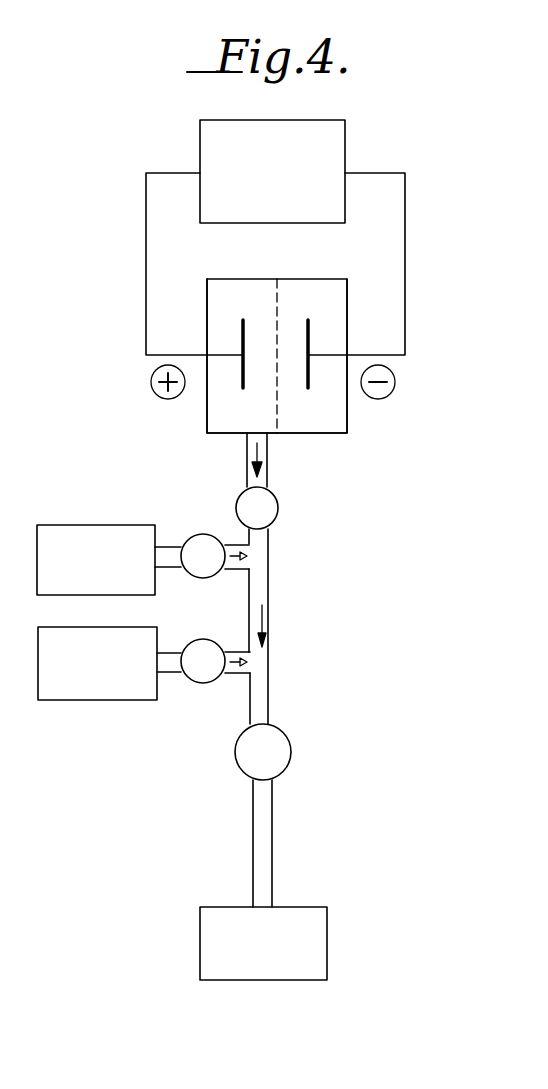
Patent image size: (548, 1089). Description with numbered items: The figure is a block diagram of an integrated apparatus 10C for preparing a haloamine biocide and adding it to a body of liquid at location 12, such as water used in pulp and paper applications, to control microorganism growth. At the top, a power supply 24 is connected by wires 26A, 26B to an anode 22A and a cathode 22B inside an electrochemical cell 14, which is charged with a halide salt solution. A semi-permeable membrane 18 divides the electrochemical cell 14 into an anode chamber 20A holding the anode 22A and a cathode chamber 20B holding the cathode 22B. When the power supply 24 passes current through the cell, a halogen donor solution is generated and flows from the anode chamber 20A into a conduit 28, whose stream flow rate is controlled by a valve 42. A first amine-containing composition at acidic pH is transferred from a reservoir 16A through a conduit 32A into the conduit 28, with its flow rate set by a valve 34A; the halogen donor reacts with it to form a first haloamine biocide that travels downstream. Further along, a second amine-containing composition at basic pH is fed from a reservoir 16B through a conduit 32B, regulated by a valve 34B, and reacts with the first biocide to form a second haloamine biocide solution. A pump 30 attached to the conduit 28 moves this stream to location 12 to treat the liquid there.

The apparatus 10C is at (188, 120).
The power supply 24 is at (332, 127).
The wire 26A is at (146, 275).
The wire 26B is at (405, 195).
The electrochemical cell 14 is at (227, 285).
The semi-permeable membrane 18 is at (278, 405).
The anode 22A is at (240, 330).
The cathode 22B is at (310, 328).
The anode chamber 20A is at (220, 420).
The cathode chamber 20B is at (337, 422).
The conduit 28 is at (263, 593).
The valve 42 is at (278, 505).
The reservoir 16A is at (75, 535).
The reservoir 16B is at (103, 685).
The conduit 32A is at (172, 565).
The conduit 32B is at (172, 658).
The valve 34A is at (192, 535).
The valve 34B is at (212, 683).
The pump 30 is at (282, 750).
The location 12 is at (215, 922).